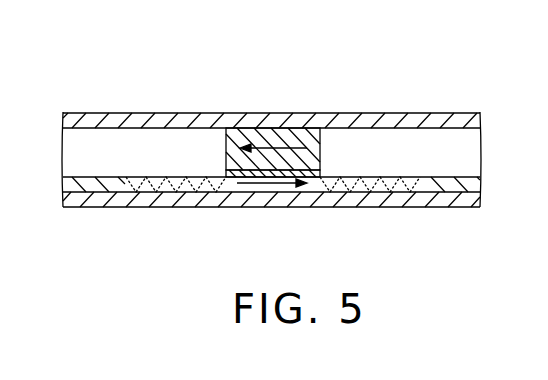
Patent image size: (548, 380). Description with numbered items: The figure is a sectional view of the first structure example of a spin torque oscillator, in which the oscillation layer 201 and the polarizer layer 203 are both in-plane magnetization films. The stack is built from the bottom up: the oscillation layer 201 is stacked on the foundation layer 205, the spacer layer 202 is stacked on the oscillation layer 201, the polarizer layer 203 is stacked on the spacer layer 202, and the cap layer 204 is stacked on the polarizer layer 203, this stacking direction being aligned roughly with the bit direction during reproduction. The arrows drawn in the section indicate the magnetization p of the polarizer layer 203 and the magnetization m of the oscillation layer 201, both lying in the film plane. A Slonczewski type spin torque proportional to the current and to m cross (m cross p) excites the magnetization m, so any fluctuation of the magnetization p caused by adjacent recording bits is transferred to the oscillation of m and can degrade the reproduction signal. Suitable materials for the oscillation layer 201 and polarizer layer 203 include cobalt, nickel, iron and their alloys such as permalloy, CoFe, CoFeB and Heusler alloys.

The oscillation layer 201 is at (105, 186).
The spacer layer 202 is at (235, 175).
The polarizer layer 203 is at (238, 134).
The cap layer 204 is at (408, 120).
The foundation layer 205 is at (433, 198).
The magnetization of the polarizer layer p is at (310, 165).
The magnetization of the oscillation layer m is at (266, 184).